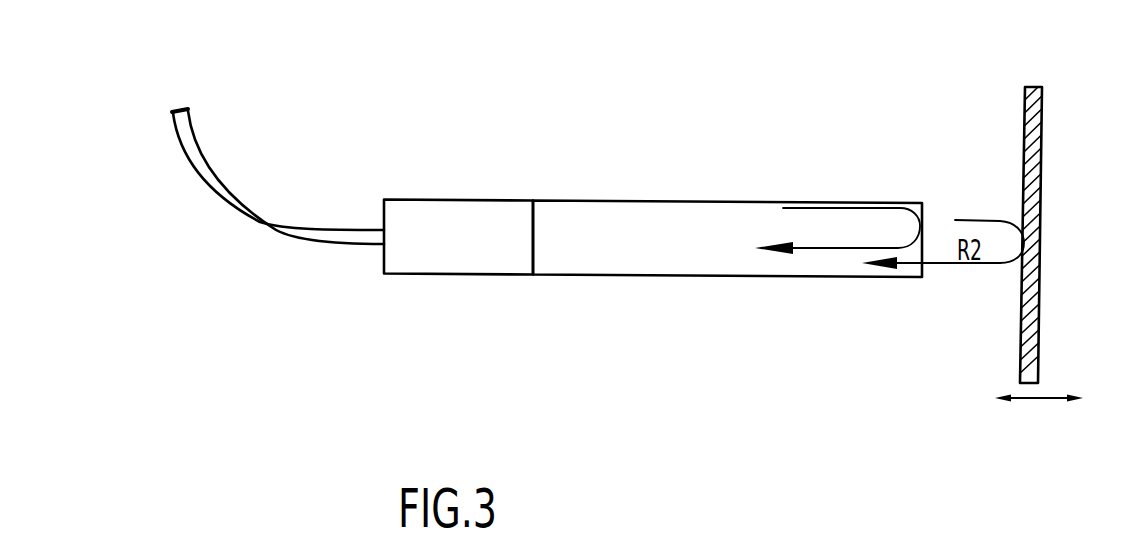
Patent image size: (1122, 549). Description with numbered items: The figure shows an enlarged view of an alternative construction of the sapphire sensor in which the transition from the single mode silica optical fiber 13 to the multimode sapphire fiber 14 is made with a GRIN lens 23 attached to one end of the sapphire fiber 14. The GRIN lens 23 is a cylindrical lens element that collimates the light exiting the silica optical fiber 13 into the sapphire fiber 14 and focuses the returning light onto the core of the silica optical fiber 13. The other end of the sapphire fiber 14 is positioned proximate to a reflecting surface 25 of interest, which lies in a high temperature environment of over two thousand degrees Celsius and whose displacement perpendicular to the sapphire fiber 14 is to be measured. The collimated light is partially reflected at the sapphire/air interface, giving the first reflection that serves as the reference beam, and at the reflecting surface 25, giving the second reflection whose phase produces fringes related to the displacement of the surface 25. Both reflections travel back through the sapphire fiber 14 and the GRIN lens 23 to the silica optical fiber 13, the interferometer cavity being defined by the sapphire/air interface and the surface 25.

The single mode silica optical fiber 13 is at (193, 128).
The GRIN lens 23 is at (428, 275).
The sapphire fiber 14 is at (585, 275).
The reflecting surface 25 is at (1023, 133).